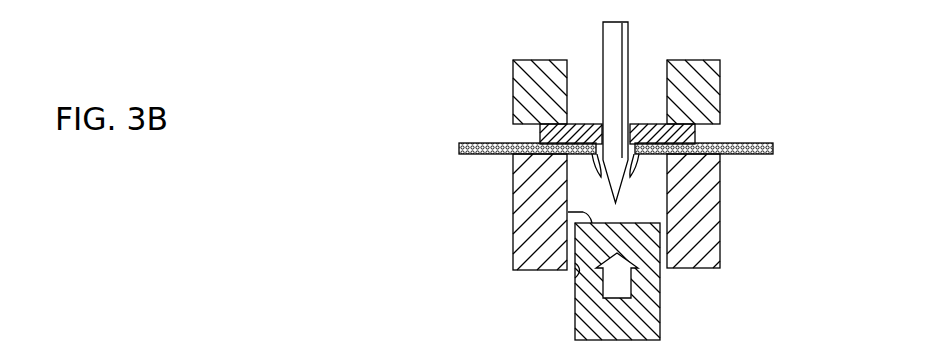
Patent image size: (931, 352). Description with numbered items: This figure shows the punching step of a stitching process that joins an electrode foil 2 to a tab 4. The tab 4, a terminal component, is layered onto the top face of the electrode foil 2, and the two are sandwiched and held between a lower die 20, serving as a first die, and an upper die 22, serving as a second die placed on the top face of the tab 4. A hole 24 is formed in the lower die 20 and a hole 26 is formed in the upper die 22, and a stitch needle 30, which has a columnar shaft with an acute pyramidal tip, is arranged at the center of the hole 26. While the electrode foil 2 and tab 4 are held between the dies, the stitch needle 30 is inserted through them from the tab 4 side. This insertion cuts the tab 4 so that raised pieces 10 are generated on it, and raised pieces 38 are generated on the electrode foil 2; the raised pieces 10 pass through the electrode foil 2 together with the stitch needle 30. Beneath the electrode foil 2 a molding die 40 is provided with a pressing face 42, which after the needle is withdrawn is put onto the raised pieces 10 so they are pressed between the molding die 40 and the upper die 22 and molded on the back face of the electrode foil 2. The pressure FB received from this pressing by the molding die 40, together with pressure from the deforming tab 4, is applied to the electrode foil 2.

The electrode foil 2 is at (478, 143).
The tab 4 is at (700, 135).
The raised pieces 10 is at (607, 196).
The lower die 20 is at (722, 241).
The upper die 22 is at (722, 70).
The hole 24 is at (576, 272).
The hole 26 is at (568, 60).
The stitch needle 30 is at (630, 37).
The raised pieces 38 is at (595, 152).
The molding die 40 is at (652, 286).
The pressing face 42 is at (515, 245).
The pressure FB is at (650, 294).